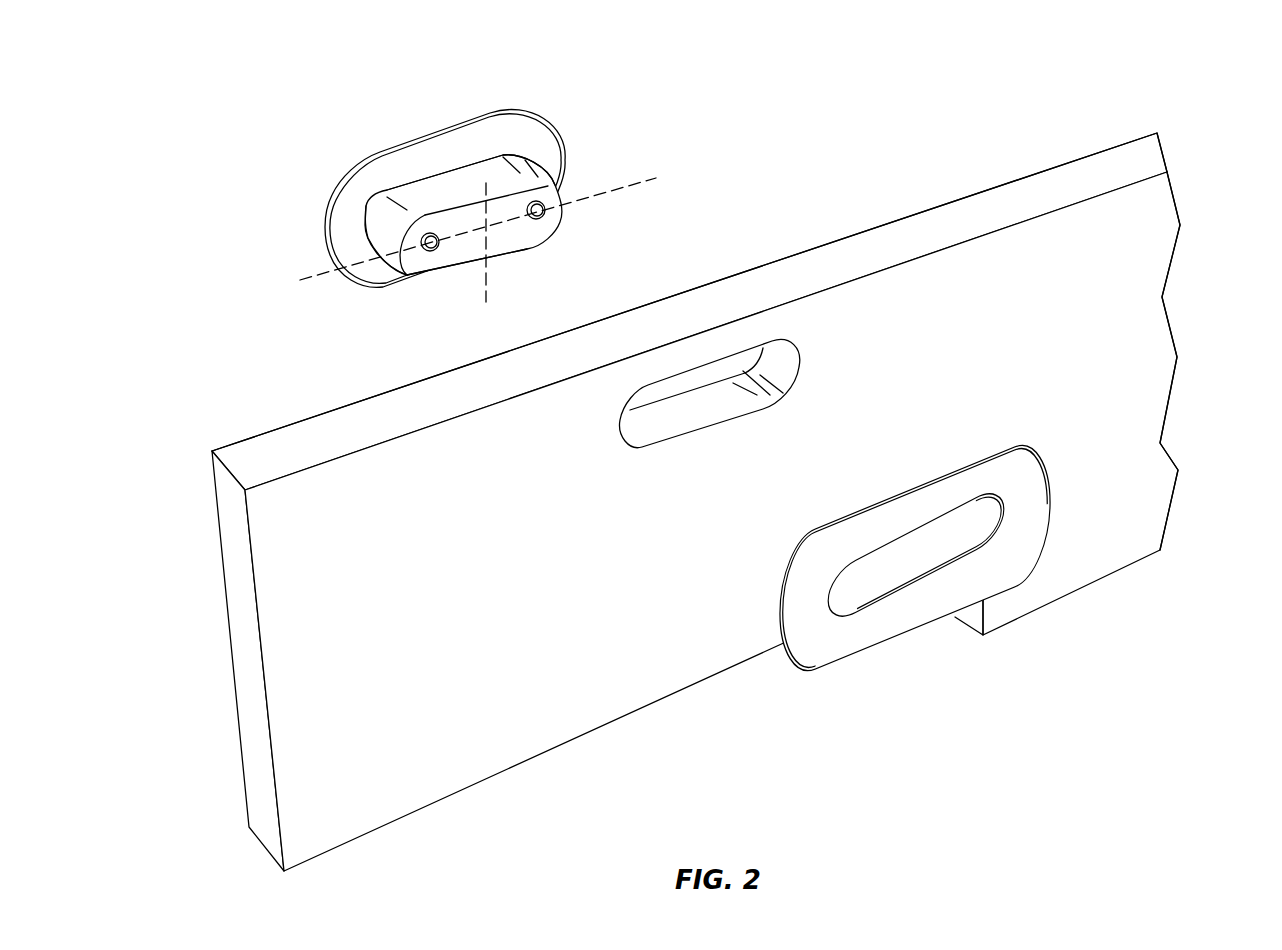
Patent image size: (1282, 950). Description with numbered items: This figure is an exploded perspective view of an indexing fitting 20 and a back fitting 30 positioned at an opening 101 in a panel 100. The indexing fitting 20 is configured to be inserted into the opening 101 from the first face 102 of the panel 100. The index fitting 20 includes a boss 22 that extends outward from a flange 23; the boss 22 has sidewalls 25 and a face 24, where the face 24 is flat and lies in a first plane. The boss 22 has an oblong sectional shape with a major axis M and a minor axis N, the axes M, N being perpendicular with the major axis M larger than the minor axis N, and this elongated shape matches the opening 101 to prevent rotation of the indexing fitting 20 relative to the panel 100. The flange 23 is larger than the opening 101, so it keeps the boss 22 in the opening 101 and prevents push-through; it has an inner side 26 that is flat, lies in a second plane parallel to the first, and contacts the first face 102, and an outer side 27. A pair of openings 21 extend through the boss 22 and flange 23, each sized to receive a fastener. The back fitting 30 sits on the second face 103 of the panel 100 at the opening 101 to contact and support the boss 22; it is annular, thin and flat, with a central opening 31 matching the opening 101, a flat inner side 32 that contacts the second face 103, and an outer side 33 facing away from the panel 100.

The indexing fitting 20 is at (480, 176).
The openings 21 is at (429, 254).
The boss 22 is at (461, 202).
The flange 23 is at (560, 133).
The face 24 is at (503, 230).
The sidewalls 25 is at (389, 221).
The inner side 26 is at (357, 193).
The outer side 27 is at (427, 133).
The back fitting 30 is at (935, 586).
The central opening 31 is at (948, 550).
The inner side 32 is at (968, 456).
The outer side 33 is at (1020, 500).
The panel 100 is at (710, 478).
The opening 101 is at (706, 397).
The first face 102 is at (1018, 168).
The second face 103 is at (1107, 282).
The major axis M is at (620, 185).
The minor axis N is at (488, 295).